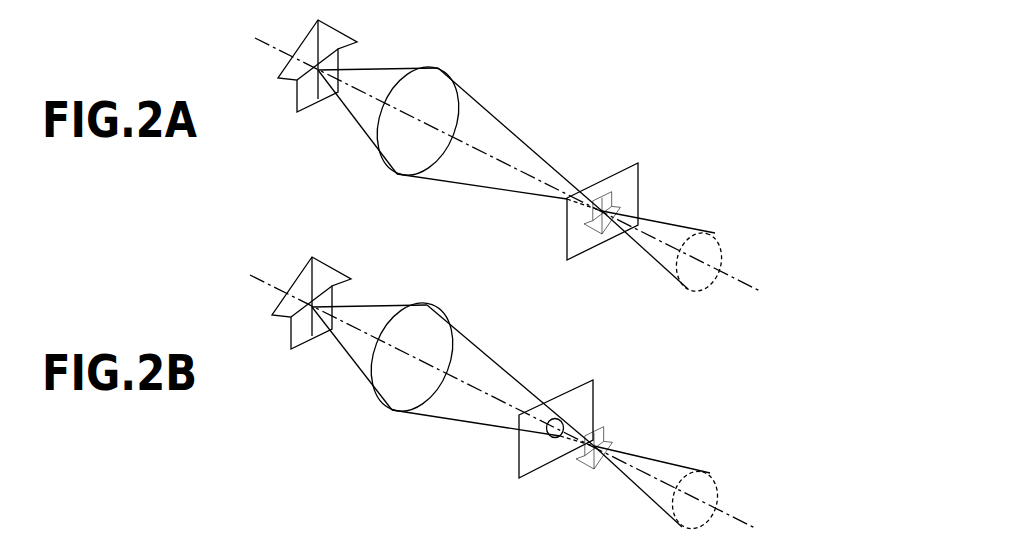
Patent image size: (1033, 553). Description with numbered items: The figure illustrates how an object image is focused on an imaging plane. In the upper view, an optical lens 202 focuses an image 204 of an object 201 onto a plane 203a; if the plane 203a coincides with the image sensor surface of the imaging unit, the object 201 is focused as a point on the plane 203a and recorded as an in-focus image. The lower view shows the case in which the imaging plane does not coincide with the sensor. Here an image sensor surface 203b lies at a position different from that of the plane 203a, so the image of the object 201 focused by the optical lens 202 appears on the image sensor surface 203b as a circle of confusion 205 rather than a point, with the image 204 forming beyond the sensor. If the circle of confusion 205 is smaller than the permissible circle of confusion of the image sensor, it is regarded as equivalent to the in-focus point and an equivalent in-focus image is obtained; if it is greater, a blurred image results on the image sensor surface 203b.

In FIG. 2A, the object 201 is at (342, 38).
In FIG. 2B, the object 201 is at (336, 264).
In FIG. 2A, the optical lens 202 is at (446, 67).
In FIG. 2B, the optical lens 202 is at (433, 303).
In FIG. 2A, the plane 203a is at (641, 184).
In FIG. 2B, the image sensor surface 203b is at (596, 393).
In FIG. 2A, the image 204 is at (593, 190).
In FIG. 2B, the image 204 is at (610, 430).
In FIG. 2B, the circle of confusion 205 is at (558, 419).